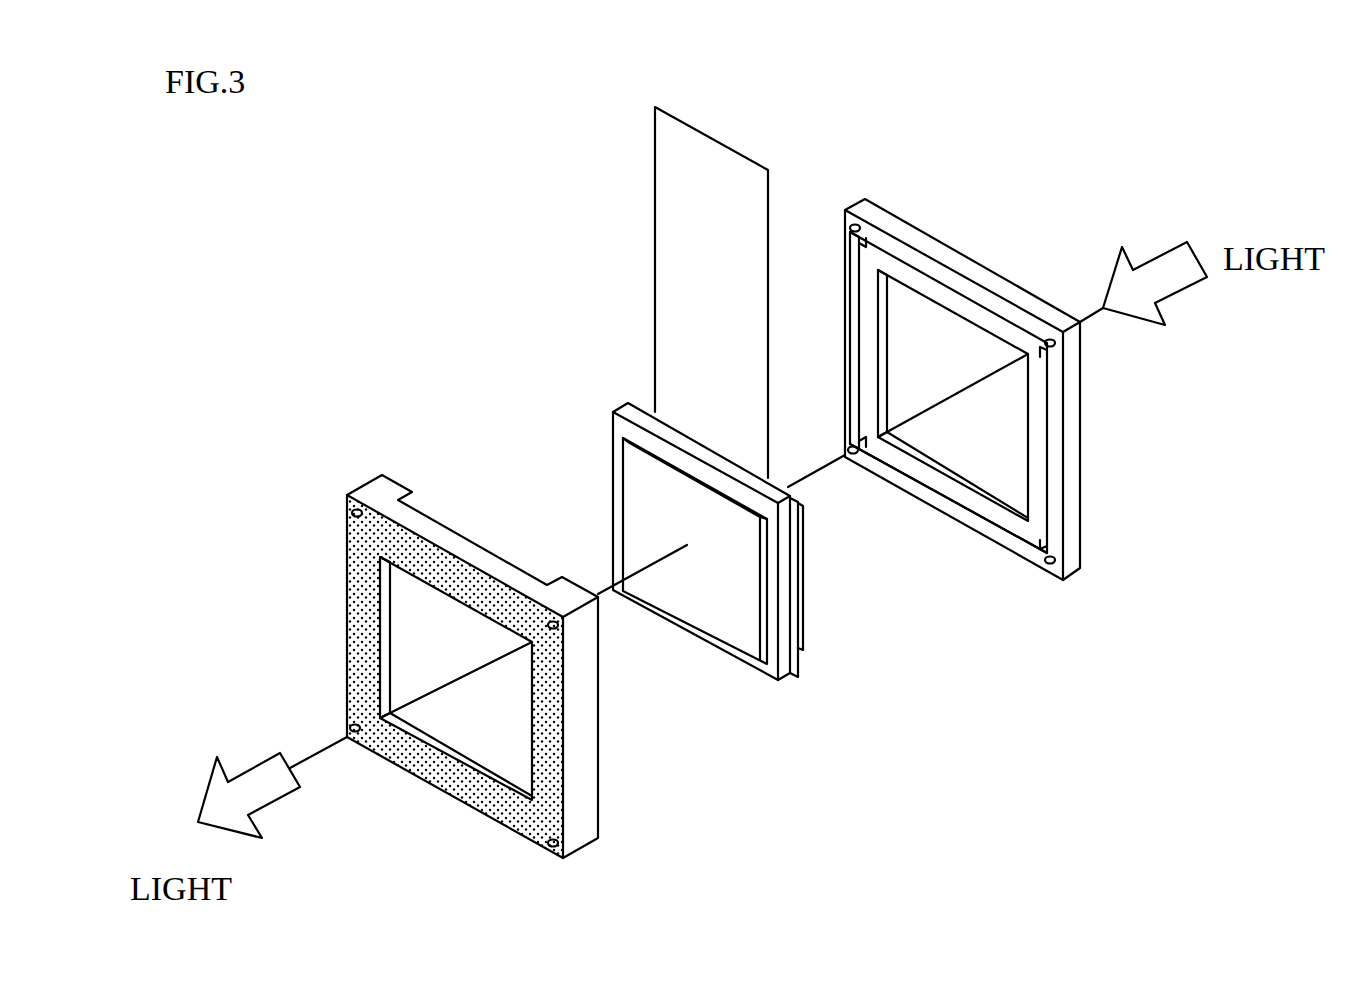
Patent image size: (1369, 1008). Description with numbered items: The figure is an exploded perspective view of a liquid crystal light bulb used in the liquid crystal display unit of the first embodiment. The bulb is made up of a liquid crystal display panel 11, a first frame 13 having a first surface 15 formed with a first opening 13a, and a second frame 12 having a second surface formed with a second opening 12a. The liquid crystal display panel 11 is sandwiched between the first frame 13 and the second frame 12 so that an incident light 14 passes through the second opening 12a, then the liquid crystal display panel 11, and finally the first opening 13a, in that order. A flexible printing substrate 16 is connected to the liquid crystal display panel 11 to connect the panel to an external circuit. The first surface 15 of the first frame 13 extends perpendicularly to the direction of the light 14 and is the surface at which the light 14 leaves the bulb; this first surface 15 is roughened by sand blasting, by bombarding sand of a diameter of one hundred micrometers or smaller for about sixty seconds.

The liquid crystal display panel 11 is at (685, 593).
The second frame 12 is at (985, 508).
The second opening 12a is at (993, 440).
The first frame 13 is at (369, 495).
The first opening 13a is at (452, 622).
The incident light 14 is at (820, 475).
The first surface 15 is at (480, 788).
The flexible printing substrate 16 is at (682, 203).